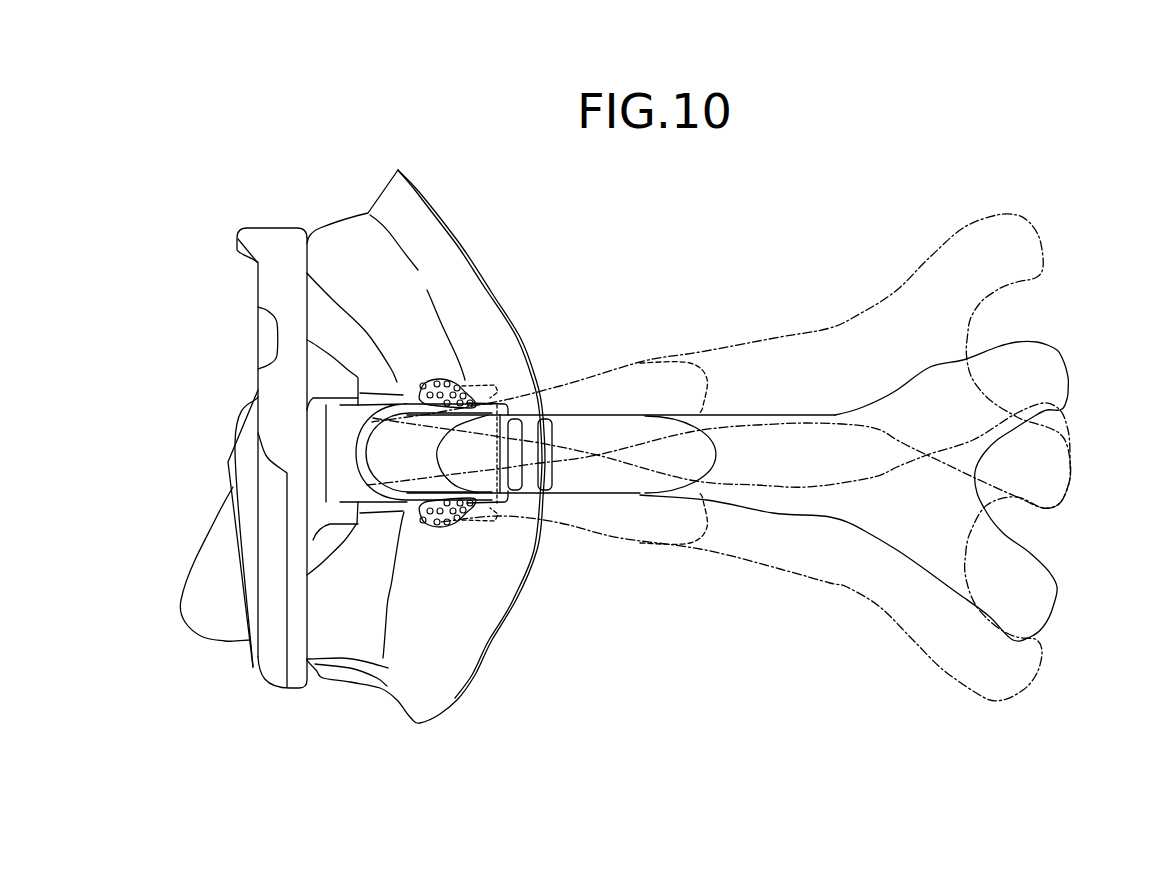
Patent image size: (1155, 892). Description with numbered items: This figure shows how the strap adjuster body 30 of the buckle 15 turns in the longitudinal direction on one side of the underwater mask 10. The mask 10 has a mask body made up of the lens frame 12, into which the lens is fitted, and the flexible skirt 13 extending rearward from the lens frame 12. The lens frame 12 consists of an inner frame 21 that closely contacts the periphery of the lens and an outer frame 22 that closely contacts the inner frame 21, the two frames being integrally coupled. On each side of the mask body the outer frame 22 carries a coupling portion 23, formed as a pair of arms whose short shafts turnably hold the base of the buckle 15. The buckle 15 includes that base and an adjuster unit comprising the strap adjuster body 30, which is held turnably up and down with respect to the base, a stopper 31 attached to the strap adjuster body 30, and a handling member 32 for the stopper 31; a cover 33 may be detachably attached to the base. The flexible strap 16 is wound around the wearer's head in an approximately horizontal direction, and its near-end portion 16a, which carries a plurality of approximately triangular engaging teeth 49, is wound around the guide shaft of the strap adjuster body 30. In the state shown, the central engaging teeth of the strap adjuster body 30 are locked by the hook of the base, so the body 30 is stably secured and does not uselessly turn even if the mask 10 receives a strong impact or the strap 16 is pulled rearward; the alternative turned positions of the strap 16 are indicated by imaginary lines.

The underwater mask 10 is at (1052, 142).
The lens frame 12 is at (270, 673).
The skirt 13 is at (390, 665).
The buckle 15 is at (496, 360).
The strap 16 is at (1027, 223).
The near-end portion of the strap 16a is at (703, 452).
The inner frame 21 is at (267, 335).
The outer frame 22 is at (280, 232).
The coupling portion 23 is at (330, 380).
The strap adjuster body 30 is at (405, 403).
The stopper 31 is at (407, 474).
The handling member 32 is at (440, 519).
The cover 33 is at (342, 487).
The engaging teeth 49 is at (548, 430).